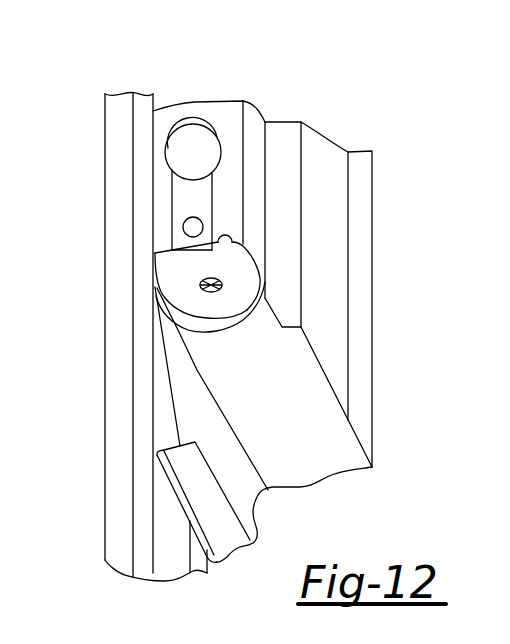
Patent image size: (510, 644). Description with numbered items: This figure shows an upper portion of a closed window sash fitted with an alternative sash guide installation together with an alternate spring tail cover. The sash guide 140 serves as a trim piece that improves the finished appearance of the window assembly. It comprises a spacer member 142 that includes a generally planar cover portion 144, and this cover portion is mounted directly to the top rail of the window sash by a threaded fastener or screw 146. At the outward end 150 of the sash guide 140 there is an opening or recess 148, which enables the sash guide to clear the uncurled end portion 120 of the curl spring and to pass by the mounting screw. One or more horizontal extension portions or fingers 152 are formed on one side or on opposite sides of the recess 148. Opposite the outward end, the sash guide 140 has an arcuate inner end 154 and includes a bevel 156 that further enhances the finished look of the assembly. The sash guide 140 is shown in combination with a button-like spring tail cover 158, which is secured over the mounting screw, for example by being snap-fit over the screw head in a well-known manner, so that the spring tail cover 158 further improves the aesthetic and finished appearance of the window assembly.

The sash guide 140 is at (333, 112).
The uncurled end portion 120 is at (197, 190).
The spring tail cover 158 is at (200, 142).
The recess 148 is at (160, 249).
The fingers 152 is at (160, 250).
The outward end 150 is at (260, 236).
The cover portion 144 is at (245, 268).
The arcuate inner end 154 is at (167, 284).
The bevel 156 is at (203, 326).
The screw 146 is at (222, 288).
The spacer member 142 is at (265, 298).